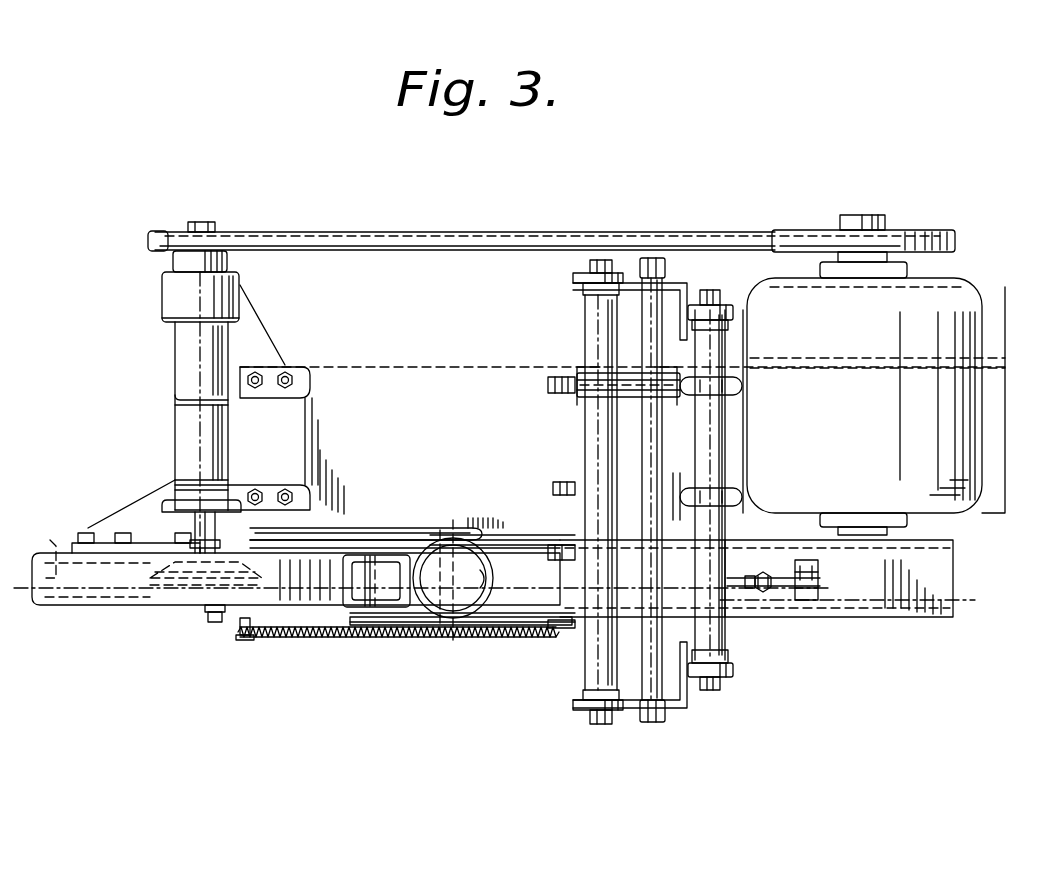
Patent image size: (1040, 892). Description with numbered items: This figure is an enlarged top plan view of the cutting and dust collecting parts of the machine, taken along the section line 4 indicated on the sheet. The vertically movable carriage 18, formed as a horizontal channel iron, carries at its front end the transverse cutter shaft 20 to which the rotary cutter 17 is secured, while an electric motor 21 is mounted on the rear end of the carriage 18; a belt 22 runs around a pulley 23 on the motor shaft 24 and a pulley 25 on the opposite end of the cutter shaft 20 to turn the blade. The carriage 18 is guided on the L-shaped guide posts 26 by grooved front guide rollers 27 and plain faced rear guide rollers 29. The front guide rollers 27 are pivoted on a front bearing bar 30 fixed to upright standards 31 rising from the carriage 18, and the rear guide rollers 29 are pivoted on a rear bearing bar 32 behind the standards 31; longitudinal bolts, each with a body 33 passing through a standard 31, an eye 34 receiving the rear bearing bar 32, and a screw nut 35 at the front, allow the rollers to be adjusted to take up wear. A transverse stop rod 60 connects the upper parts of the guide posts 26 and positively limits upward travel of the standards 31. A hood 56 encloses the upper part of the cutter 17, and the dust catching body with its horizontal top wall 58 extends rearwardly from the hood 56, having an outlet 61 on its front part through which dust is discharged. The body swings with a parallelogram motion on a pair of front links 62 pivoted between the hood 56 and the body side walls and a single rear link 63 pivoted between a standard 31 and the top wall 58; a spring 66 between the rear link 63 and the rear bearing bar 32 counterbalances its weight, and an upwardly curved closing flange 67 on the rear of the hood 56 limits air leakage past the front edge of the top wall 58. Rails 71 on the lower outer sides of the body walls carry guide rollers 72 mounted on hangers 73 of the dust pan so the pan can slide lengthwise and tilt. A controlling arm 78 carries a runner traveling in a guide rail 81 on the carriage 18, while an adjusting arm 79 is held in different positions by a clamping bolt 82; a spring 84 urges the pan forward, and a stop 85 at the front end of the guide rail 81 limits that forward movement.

The section line 4 is at (12, 592).
The rotary cutter 17 is at (50, 553).
The vertically movable carriage 18 is at (992, 283).
The cutter shaft 20 is at (205, 230).
The electric motor 21 is at (862, 406).
The belt 22 is at (455, 232).
The pulley 23 is at (792, 230).
The motor shaft 24 is at (868, 209).
The pulley 25 is at (158, 231).
The guide posts 26 is at (685, 285).
The front guide rollers 27 is at (573, 276).
The rear guide rollers 29 is at (725, 305).
The front bearing bar 30 is at (590, 432).
The upright standards 31 is at (622, 370).
The rear bearing bar 32 is at (722, 437).
The bolt body 33 is at (634, 397).
The eye 34 is at (742, 387).
The screw nut 35 is at (548, 390).
The hood 56 is at (65, 605).
The top wall 58 is at (756, 578).
The stop rod 60 is at (648, 313).
The outlet 61 is at (490, 576).
The front links 62 is at (225, 622).
The rear link 63 is at (770, 586).
The spring 66 is at (766, 576).
The closing flange 67 is at (412, 574).
The rails 71 is at (940, 535).
The guide rollers 72 is at (548, 545).
The hangers 73 is at (570, 548).
The controlling arm 78 is at (398, 528).
The adjusting arm 79 is at (175, 373).
The guide rail 81 is at (468, 516).
The clamping bolt 82 is at (362, 632).
The spring 84 is at (252, 640).
The stop 85 is at (268, 485).